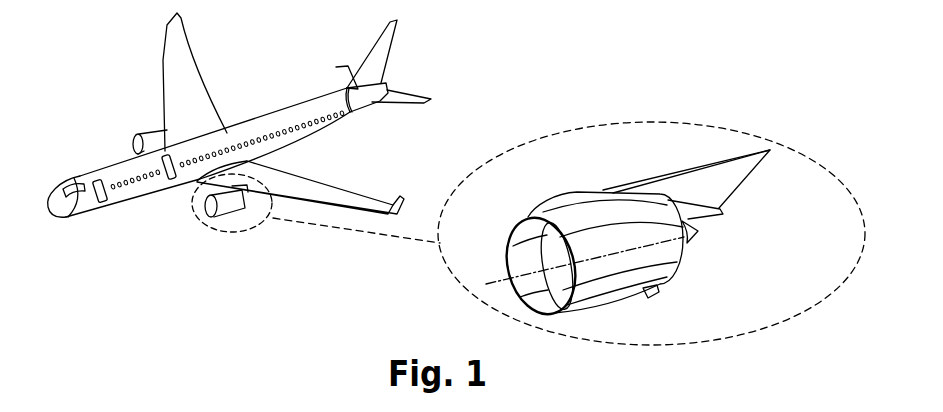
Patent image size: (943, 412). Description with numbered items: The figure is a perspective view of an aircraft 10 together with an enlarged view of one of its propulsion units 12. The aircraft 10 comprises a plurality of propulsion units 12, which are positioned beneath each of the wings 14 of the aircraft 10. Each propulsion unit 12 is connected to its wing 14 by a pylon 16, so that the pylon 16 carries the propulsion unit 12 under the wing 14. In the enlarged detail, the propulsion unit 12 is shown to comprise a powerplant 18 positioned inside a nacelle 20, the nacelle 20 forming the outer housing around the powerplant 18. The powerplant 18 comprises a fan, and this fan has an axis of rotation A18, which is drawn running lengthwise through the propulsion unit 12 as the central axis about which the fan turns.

The aircraft 10 is at (456, 176).
The propulsion unit 12 is at (123, 133).
The wing 14 is at (186, 72).
The pylon 16 is at (716, 187).
The powerplant 18 is at (706, 242).
The nacelle 20 is at (671, 282).
The axis of rotation A18 is at (492, 282).